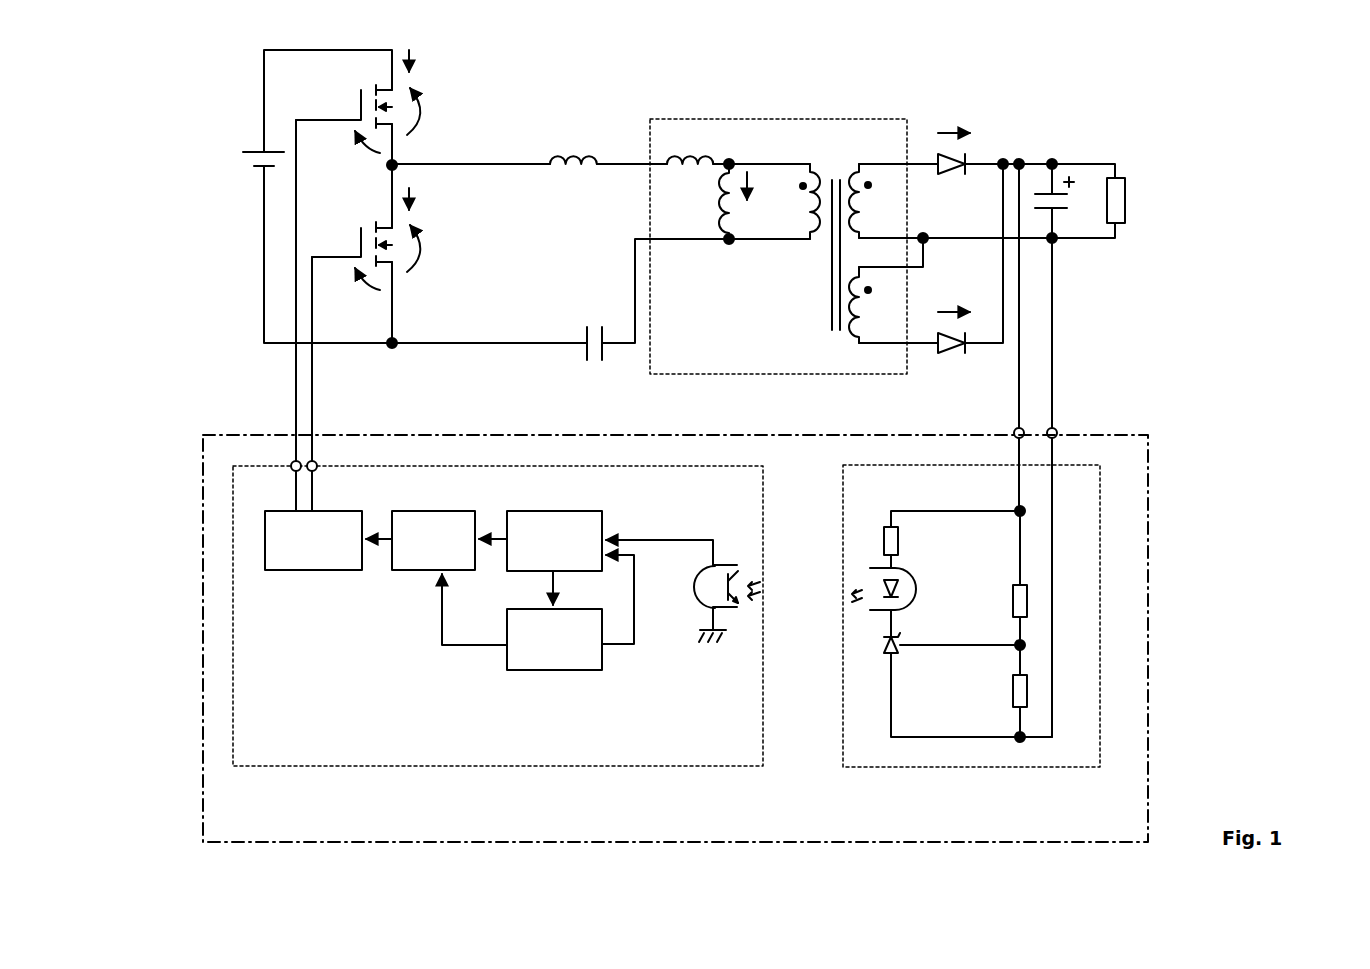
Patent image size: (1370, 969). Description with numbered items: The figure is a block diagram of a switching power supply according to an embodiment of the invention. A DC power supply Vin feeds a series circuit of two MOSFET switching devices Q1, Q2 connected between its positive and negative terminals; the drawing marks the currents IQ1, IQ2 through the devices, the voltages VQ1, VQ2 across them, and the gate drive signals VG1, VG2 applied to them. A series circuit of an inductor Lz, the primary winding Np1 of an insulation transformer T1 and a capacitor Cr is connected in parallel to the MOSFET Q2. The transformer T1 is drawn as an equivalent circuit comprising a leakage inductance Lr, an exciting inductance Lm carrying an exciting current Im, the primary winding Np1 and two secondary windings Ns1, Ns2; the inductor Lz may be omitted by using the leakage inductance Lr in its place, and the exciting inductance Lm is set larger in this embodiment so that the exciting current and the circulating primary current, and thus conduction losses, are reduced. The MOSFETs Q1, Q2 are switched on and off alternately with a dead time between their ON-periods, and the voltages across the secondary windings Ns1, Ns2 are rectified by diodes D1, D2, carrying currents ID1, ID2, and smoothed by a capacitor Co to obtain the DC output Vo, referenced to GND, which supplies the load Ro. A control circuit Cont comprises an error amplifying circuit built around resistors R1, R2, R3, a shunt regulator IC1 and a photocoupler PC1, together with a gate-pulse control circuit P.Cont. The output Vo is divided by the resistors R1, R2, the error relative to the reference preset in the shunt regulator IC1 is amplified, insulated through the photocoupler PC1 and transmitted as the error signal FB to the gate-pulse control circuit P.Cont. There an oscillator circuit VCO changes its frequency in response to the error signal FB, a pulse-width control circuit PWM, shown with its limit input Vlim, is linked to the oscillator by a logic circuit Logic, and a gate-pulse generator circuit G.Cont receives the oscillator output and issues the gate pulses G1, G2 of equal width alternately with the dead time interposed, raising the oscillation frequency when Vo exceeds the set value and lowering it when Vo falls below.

The DC power supply Vin is at (242, 158).
The switching device Q1 is at (344, 106).
The switching device Q2 is at (352, 244).
The current through Q1 IQ1 is at (434, 62).
The current through Q2 IQ2 is at (434, 200).
The voltage across Q1 VQ1 is at (441, 111).
The voltage across Q2 VQ2 is at (441, 248).
The gate drive voltage of Q1 VG1 is at (354, 153).
The gate drive voltage of Q2 VG2 is at (354, 289).
The inductor Lz is at (573, 144).
The capacitor Cr is at (591, 361).
The insulation transformer T1 is at (778, 232).
The leakage inductance Lr is at (690, 148).
The exciting inductance Lm is at (705, 201).
The magnetizing current Im is at (764, 186).
The primary winding Np1 is at (793, 201).
The secondary winding Ns1 is at (875, 201).
The secondary winding Ns2 is at (875, 305).
The rectifying diode D1 is at (953, 176).
The rectifying diode D2 is at (953, 359).
The current through D1 ID1 is at (956, 120).
The current through D2 ID2 is at (956, 299).
The capacitor Co is at (1066, 196).
The load Ro is at (1135, 200).
The DC output Vo is at (1056, 320).
The output ground GND is at (1075, 573).
The control circuit Cont is at (353, 842).
The gate-pulse control circuit P.Cont is at (443, 766).
The gate pulse G1 is at (280, 315).
The gate pulse G2 is at (326, 384).
The gate-pulse generator circuit G.Cont is at (313, 540).
The logic circuit Logic is at (420, 540).
The oscillator circuit VCO is at (540, 558).
The pulse-width control circuit PWM is at (522, 622).
The limit voltage signal Vlim is at (640, 612).
The error signal FB is at (659, 539).
The photocoupler PC1 is at (753, 652).
The resistor R3 is at (952, 539).
The shunt regulator IC1 is at (952, 673).
The resistor R1 is at (1005, 578).
The resistor R2 is at (1005, 691).